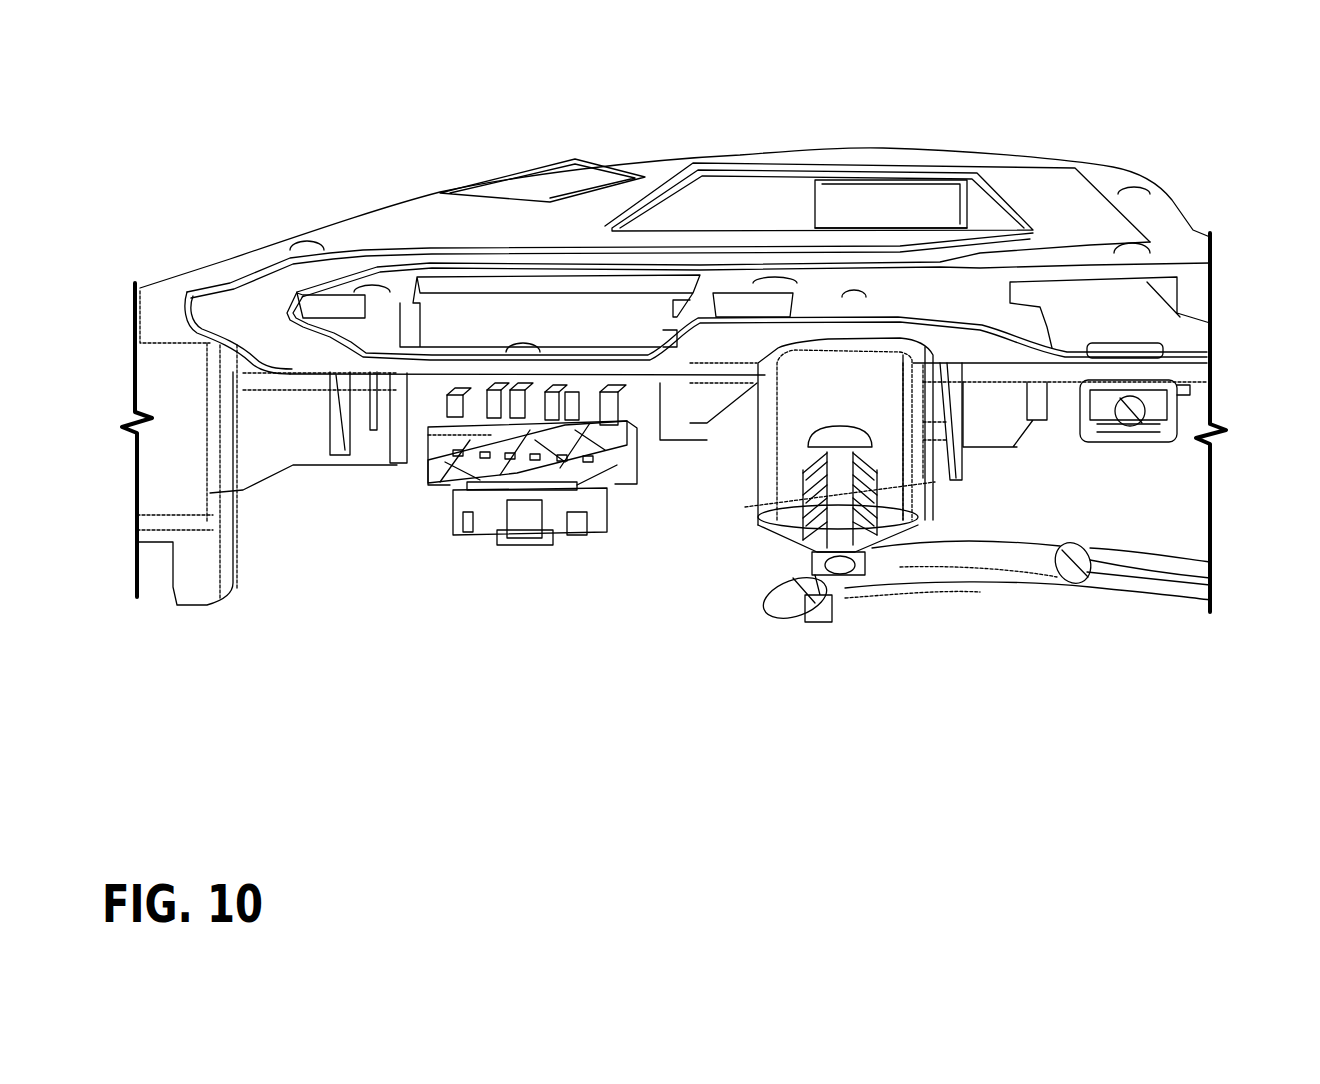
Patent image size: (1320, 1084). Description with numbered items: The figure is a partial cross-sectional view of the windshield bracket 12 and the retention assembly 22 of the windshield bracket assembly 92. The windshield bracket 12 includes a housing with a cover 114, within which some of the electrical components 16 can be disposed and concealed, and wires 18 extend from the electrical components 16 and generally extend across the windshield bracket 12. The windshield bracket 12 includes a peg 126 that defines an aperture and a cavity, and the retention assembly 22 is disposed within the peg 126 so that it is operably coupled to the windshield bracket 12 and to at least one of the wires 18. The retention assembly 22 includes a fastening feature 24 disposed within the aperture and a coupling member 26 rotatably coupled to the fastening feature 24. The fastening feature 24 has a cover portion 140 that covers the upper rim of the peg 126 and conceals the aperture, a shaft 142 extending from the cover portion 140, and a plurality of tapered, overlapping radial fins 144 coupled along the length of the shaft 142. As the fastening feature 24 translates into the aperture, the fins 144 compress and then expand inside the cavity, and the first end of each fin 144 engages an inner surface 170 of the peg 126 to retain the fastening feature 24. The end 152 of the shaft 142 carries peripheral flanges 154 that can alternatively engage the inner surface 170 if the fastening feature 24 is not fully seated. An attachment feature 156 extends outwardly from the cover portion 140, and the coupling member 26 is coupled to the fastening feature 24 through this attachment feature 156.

The windshield bracket 12 is at (221, 258).
The windshield bracket assembly 92 is at (275, 181).
The cover 114 is at (420, 230).
The peripheral flanges 154 is at (823, 440).
The end of the shaft 152 is at (830, 426).
The peg 126 is at (877, 392).
The radial fins 144 is at (880, 460).
The inner surface 170 is at (880, 497).
The electrical components 16 is at (517, 437).
The retention assembly 22 is at (733, 487).
The shaft 142 is at (752, 492).
The fastening feature 24 is at (805, 517).
The coupling member 26 is at (838, 593).
The attachment feature 156 is at (840, 567).
The cover portion 140 is at (857, 563).
The wires 18 is at (1017, 563).